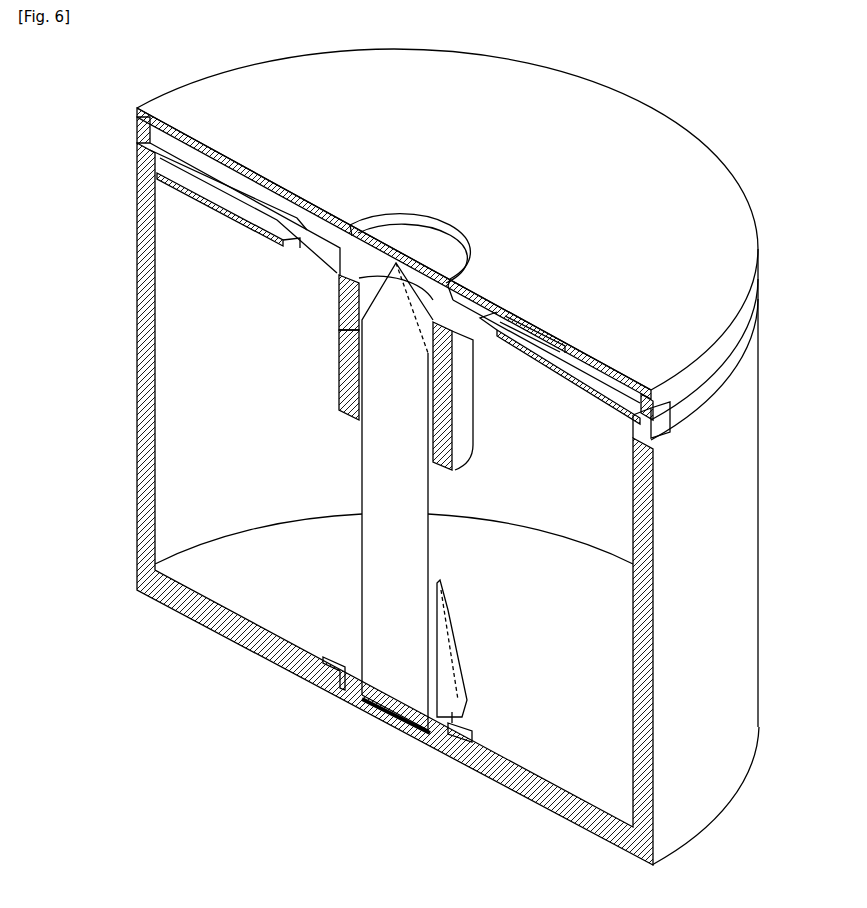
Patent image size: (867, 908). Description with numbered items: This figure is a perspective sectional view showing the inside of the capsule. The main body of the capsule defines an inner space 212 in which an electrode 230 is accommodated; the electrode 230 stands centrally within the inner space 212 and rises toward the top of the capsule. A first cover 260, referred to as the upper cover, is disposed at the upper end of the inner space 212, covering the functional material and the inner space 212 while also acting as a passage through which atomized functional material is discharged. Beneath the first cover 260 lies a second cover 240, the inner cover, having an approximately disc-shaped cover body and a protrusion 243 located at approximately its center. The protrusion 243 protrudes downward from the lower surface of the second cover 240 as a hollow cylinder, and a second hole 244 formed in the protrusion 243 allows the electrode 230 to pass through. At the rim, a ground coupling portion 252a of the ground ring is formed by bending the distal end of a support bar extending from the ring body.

The first cover 260 is at (743, 219).
The second cover 240 is at (215, 210).
The second hole 244 is at (345, 296).
The protrusion 243 is at (345, 372).
The electrode 230 is at (380, 487).
The inner space 212 is at (258, 592).
The ground coupling portion 252a is at (660, 430).